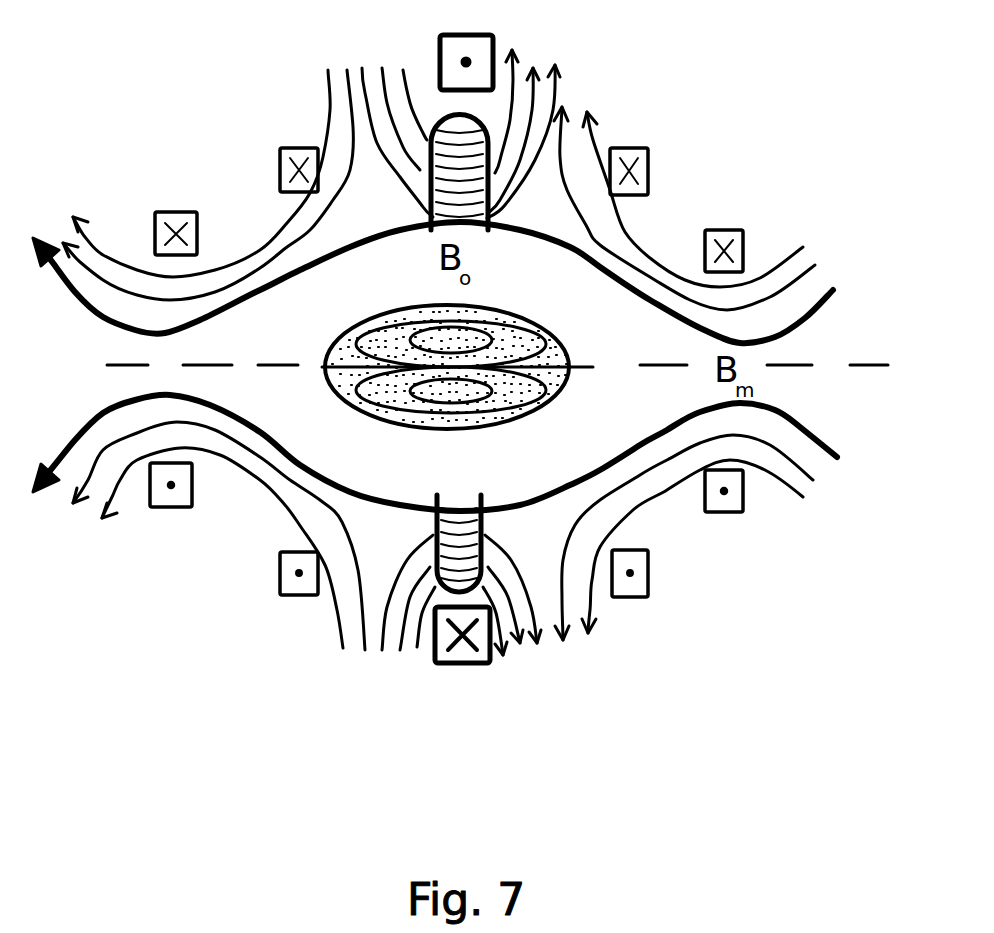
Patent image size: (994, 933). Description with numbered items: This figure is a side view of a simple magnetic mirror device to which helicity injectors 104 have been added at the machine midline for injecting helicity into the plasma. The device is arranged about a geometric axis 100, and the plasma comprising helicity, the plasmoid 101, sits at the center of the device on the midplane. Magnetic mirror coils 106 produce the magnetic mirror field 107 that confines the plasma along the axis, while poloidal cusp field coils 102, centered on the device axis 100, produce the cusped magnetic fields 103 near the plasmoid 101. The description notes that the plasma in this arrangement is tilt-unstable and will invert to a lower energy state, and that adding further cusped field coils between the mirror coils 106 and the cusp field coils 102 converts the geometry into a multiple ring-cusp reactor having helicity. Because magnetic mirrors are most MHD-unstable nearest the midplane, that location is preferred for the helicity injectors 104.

The device geometric axis 100 is at (870, 372).
The plasmoid 101 is at (553, 340).
The poloidal cusp field coils 102 is at (280, 575).
The cusped magnetic fields 103 is at (340, 507).
The helicity injectors 104 is at (513, 500).
The magnetic mirror coils 106 is at (172, 507).
The magnetic mirror field 107 is at (327, 257).